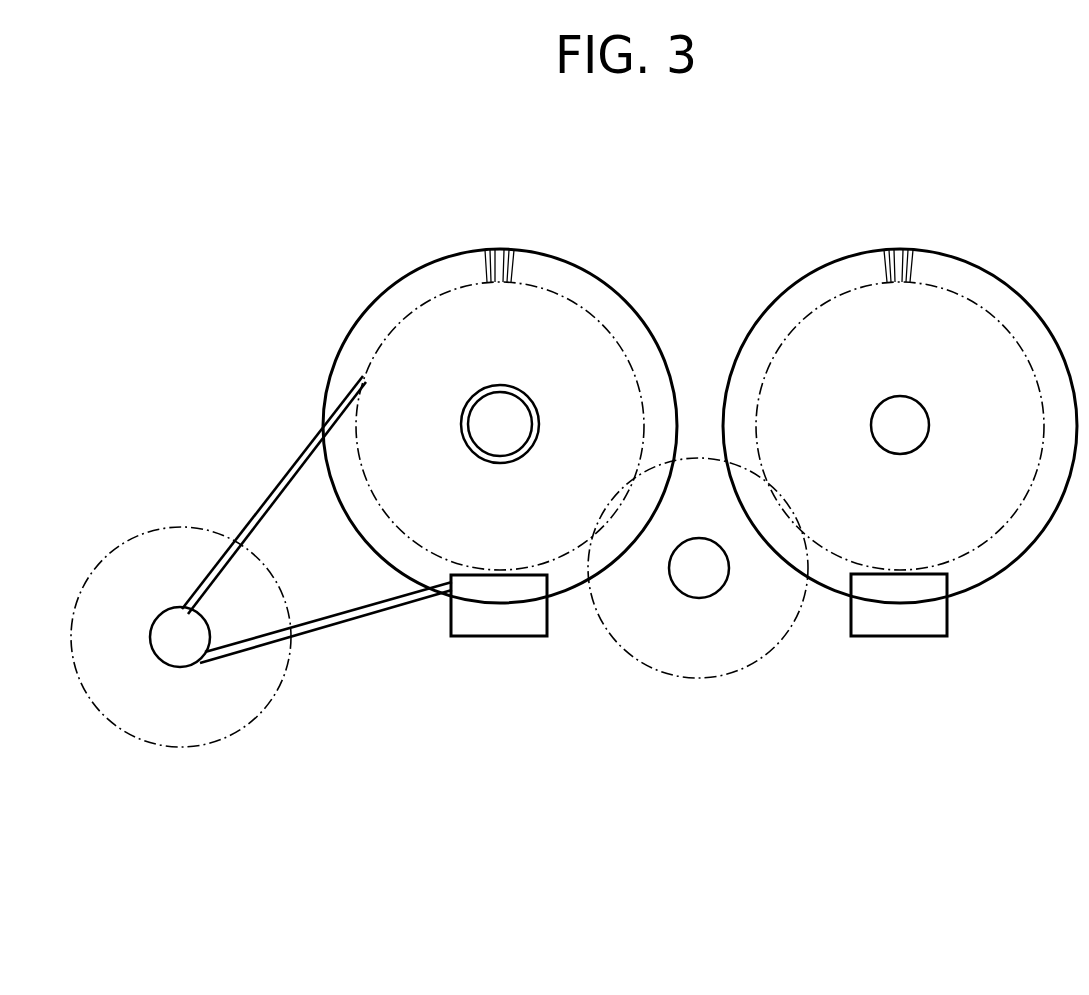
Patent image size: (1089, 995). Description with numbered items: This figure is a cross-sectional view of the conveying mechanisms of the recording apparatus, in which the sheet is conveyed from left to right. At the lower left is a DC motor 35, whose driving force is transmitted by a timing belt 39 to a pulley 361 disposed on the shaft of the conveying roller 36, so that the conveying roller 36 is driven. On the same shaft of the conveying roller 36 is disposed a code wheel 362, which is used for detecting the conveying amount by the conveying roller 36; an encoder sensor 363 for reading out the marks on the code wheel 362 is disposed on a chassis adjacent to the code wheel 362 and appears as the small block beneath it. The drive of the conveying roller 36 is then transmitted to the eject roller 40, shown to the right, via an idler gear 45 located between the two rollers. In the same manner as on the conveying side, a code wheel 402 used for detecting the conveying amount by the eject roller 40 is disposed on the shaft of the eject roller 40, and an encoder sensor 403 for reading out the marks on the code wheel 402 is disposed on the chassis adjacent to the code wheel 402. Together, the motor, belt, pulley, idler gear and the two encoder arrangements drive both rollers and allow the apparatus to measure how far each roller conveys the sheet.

The code wheel 362 is at (418, 265).
The pulley 361 is at (417, 510).
The conveying roller 36 is at (487, 413).
The encoder sensor 363 is at (538, 623).
The timing belt 39 is at (282, 475).
The DC motor 35 is at (212, 715).
The idler gear 45 is at (752, 623).
The code wheel 402 is at (982, 265).
The eject roller 40 is at (923, 442).
The encoder sensor 403 is at (943, 623).